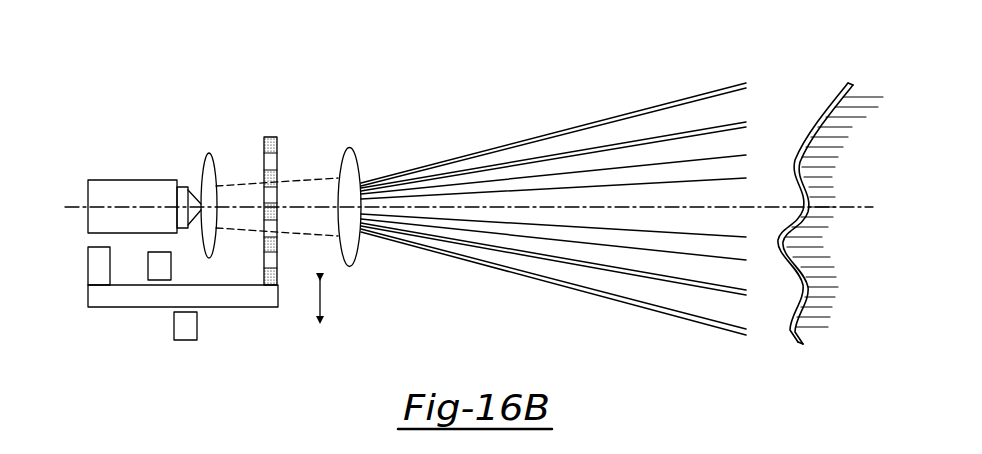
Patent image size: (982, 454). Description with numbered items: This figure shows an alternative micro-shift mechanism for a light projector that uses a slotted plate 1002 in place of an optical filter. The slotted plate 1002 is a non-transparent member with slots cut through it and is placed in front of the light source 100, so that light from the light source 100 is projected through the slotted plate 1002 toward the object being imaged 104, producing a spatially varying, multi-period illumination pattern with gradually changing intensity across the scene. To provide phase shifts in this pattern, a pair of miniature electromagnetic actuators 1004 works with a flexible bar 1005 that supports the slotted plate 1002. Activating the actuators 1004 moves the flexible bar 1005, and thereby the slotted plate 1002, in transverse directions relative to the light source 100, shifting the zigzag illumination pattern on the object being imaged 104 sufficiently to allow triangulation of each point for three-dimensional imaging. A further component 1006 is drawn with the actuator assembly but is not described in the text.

The light source 100 is at (112, 180).
The slotted plate 1002 is at (269, 137).
The miniature electromagnetic actuators 1004 is at (128, 300).
The controller electronics 1006 is at (171, 265).
The flexible bar 1005 is at (277, 282).
The object being imaged 104 is at (836, 205).